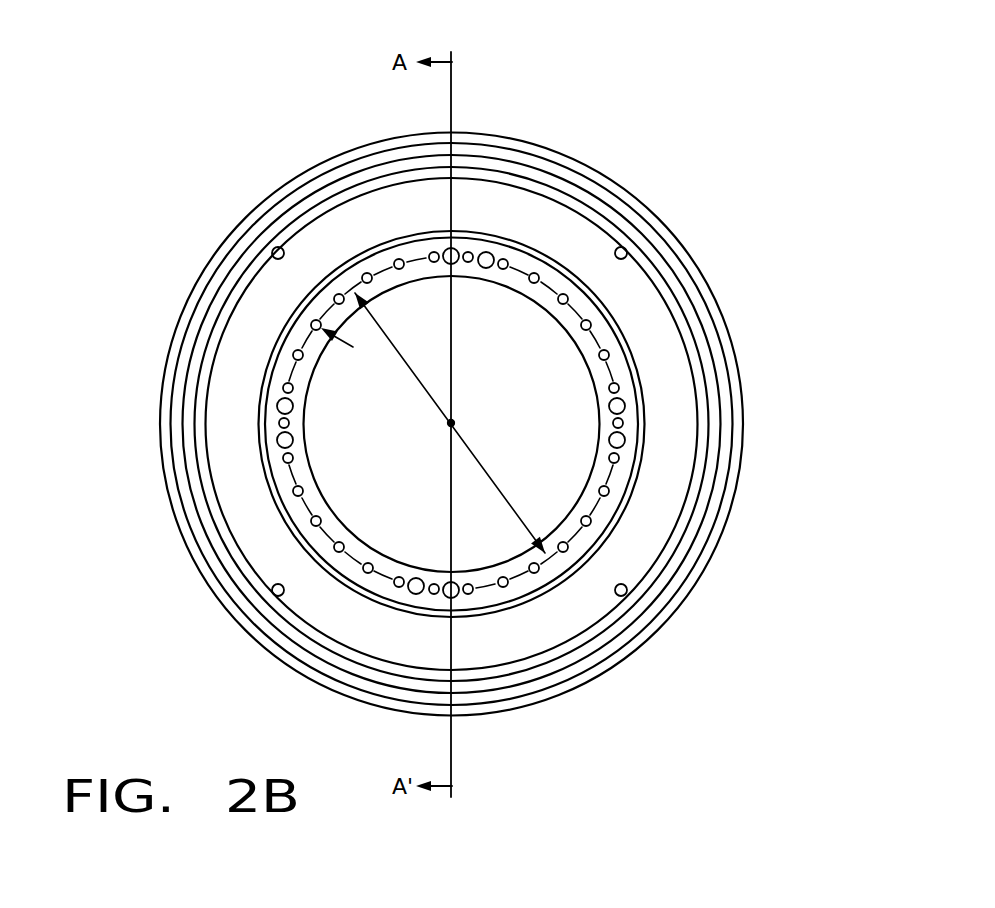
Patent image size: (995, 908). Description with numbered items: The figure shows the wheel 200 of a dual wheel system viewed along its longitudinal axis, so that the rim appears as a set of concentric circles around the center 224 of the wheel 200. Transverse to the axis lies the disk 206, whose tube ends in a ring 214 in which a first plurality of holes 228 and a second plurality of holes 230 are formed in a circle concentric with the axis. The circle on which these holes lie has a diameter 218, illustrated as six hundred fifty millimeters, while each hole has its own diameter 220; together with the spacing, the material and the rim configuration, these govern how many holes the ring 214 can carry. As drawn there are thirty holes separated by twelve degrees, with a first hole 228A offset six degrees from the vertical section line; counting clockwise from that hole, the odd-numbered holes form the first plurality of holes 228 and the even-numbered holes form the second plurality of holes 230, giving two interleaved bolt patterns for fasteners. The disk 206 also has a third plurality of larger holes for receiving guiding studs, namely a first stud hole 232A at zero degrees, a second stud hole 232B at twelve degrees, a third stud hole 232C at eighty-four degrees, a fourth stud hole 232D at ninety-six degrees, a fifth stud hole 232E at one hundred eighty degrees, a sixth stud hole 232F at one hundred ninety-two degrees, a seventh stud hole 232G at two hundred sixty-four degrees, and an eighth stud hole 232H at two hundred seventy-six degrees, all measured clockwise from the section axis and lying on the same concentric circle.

The wheel 200 is at (769, 681).
The disk 206 is at (630, 292).
The ring 214 is at (597, 617).
The diameter of the circle of the plurality of holes 218 is at (478, 462).
The diameter of each hole 220 is at (297, 315).
The center of the wheel 224 is at (451, 423).
The first plurality of holes 228 is at (335, 295).
The first hole 228A is at (462, 253).
The second plurality of holes 230 is at (310, 326).
The first stud hole 232A is at (444, 250).
The second stud hole 232B is at (493, 248).
The third stud hole 232C is at (625, 403).
The fourth stud hole 232D is at (626, 446).
The fifth stud hole 232E is at (453, 598).
The sixth stud hole 232F is at (415, 595).
The seventh stud hole 232G is at (280, 445).
The eighth stud hole 232H is at (279, 404).